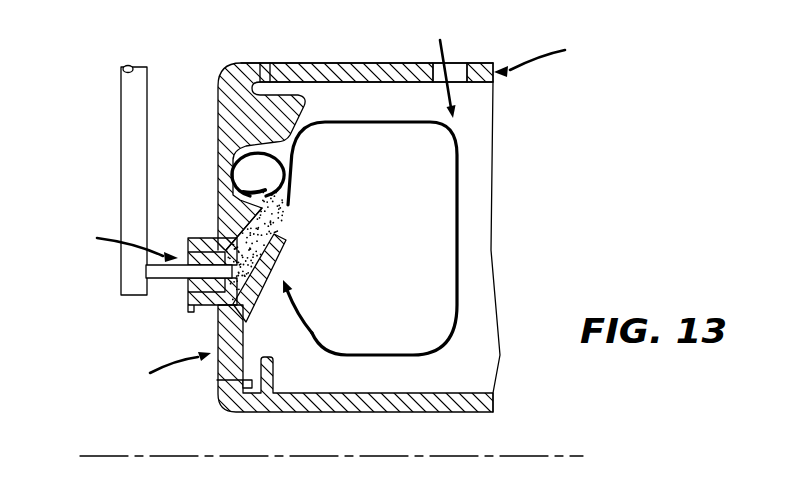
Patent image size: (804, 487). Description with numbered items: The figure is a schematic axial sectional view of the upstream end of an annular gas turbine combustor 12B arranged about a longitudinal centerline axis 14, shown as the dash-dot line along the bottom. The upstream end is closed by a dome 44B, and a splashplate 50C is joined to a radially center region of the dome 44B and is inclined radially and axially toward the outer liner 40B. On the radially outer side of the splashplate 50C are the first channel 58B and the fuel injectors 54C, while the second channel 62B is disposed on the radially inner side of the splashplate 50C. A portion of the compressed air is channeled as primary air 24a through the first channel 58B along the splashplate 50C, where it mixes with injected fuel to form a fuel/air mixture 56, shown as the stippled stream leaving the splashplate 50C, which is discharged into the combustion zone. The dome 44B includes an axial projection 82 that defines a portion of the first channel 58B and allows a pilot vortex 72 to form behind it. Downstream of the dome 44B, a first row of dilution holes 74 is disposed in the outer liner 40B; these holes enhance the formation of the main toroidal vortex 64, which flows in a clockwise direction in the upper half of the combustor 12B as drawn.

The combustor 12B is at (541, 217).
The longitudinal centerline axis 14 is at (535, 453).
The primary air 24a is at (113, 249).
The outer liner 40B is at (348, 63).
The dome 44B is at (216, 120).
The splashplate 50C is at (276, 266).
The fuel injector 54C is at (121, 155).
The fuel/air mixture 56 is at (284, 228).
The first channel 58B is at (188, 283).
The second channel 62B is at (217, 360).
The main toroidal vortex 64 is at (407, 124).
The pilot vortex 72 is at (287, 148).
The dilution holes 74 is at (456, 62).
The axial projection 82 is at (232, 225).